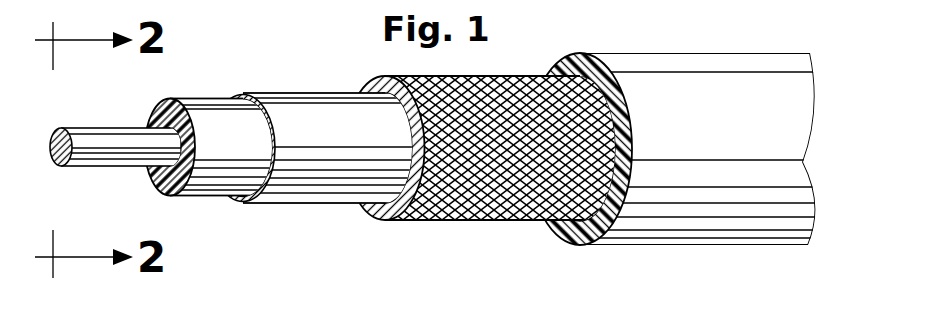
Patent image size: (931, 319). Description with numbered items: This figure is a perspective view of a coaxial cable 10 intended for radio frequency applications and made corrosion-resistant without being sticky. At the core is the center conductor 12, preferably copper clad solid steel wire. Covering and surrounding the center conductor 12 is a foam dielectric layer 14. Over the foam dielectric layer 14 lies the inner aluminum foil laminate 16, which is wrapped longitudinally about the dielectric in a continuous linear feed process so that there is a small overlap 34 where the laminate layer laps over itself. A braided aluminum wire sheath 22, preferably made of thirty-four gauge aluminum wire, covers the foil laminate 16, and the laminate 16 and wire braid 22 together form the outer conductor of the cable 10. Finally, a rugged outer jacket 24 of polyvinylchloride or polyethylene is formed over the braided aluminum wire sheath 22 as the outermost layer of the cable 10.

The coaxial cable 10 is at (336, 72).
The center conductor 12 is at (119, 157).
The foam dielectric layer 14 is at (196, 188).
The overlap 34 is at (287, 180).
The inner aluminum foil laminate 16 is at (332, 200).
The braided aluminum wire sheath 22 is at (443, 222).
The outer jacket 24 is at (568, 236).